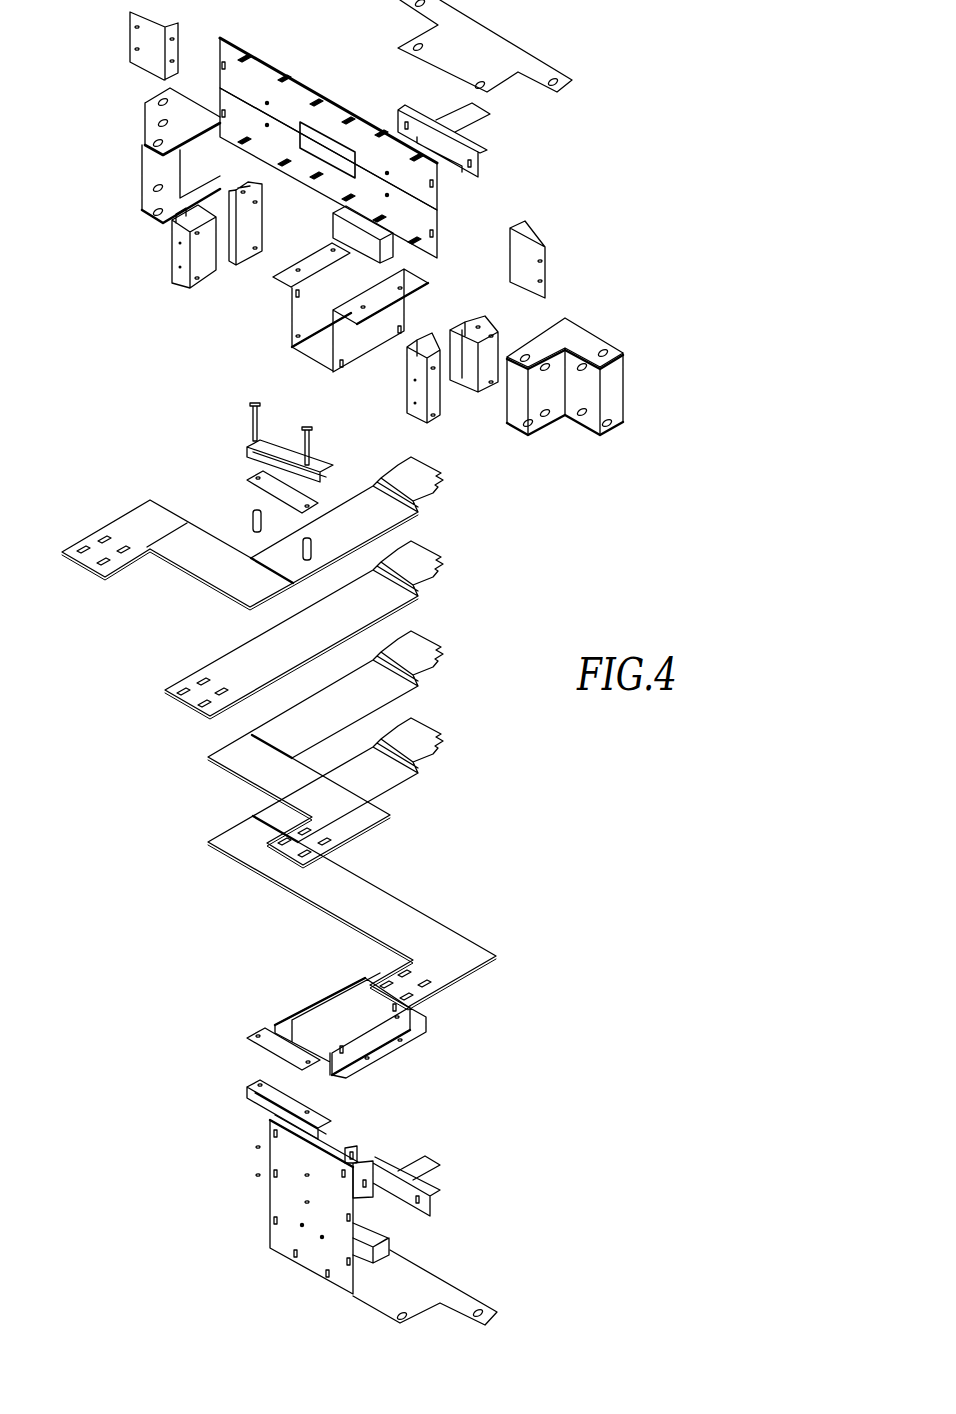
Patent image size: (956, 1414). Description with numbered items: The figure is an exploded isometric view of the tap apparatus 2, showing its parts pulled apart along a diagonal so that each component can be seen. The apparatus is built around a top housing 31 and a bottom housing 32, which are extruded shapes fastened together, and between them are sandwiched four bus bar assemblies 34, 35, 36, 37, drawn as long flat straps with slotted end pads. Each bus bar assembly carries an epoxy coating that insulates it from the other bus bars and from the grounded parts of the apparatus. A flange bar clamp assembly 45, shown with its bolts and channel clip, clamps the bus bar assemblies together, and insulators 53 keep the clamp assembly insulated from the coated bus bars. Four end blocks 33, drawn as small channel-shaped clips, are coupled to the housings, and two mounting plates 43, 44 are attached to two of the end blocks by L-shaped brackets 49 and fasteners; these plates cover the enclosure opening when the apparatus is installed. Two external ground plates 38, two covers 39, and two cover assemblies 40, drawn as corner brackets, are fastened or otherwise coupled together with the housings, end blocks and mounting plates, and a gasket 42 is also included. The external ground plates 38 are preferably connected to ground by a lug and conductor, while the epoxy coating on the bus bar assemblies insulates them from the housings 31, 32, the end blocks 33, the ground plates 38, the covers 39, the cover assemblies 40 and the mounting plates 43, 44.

The tap apparatus 2 is at (597, 195).
The top housing 31 is at (410, 305).
The bottom housing 32 is at (420, 1038).
The end blocks 33 is at (237, 263).
The bus bar assembly 34 is at (95, 567).
The bus bar assembly 35 is at (172, 700).
The bus bar assembly 36 is at (212, 766).
The bus bar assembly 37 is at (412, 905).
The external ground plates 38 is at (468, 120).
The covers 39 is at (515, 50).
The cover assemblies 40 is at (145, 116).
The gasket 42 is at (392, 1245).
The mounting plate 43 is at (262, 70).
The mounting plate 44 is at (428, 224).
The flange bar clamp assembly 45 is at (285, 444).
The L-shaped brackets 49 is at (130, 40).
The insulators 53 is at (248, 480).